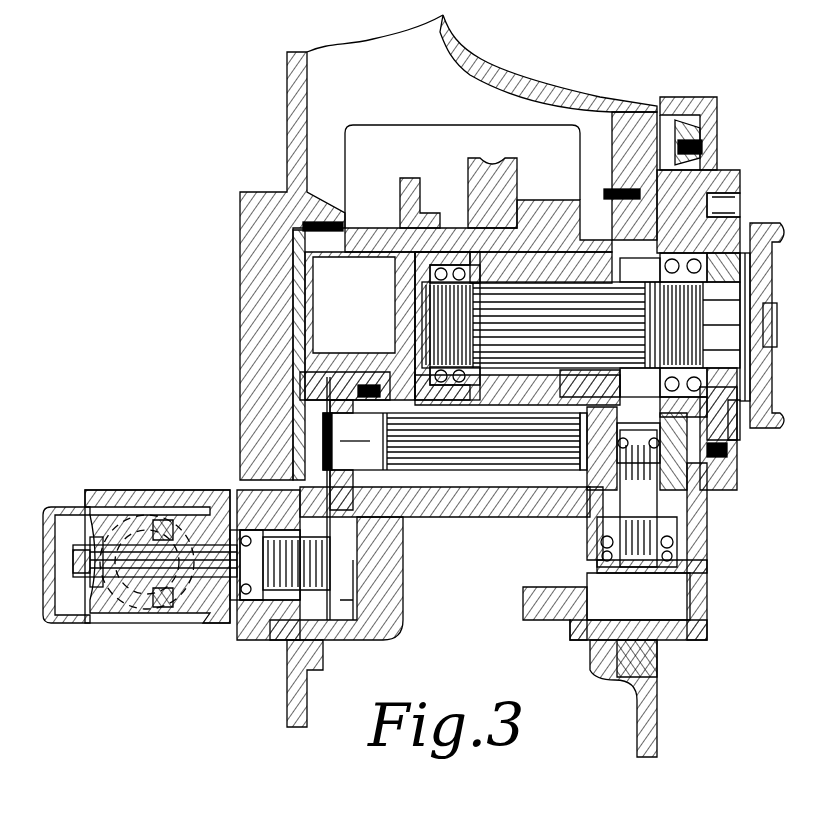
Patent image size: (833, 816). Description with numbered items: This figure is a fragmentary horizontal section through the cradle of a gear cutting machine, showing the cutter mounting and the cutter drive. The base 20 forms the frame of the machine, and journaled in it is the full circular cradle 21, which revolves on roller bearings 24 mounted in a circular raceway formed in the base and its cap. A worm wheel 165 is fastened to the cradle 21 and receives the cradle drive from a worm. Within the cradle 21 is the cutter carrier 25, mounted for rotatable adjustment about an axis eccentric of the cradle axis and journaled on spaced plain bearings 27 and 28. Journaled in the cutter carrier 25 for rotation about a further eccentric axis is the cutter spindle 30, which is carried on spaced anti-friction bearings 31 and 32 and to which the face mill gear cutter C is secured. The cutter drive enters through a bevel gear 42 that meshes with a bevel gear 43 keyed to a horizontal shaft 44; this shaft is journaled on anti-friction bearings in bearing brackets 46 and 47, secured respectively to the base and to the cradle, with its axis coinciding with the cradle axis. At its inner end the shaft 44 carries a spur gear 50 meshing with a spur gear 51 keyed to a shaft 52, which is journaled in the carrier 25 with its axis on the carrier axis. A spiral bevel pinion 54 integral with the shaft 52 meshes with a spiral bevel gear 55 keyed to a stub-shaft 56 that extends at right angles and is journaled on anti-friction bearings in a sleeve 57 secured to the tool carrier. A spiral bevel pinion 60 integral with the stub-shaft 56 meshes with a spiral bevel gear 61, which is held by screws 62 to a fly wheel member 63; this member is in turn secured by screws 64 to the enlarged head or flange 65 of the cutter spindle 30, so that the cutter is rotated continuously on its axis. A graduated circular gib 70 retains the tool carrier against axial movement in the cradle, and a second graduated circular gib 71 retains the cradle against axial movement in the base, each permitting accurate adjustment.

The base 20 is at (560, 94).
The cradle 21 is at (366, 228).
The roller bearings 24 is at (318, 222).
The cutter carrier 25 is at (486, 505).
The plain bearing 27 is at (580, 218).
The plain bearing 28 is at (399, 522).
The cutter spindle 30 is at (530, 300).
The anti-friction bearing 31 is at (668, 258).
The anti-friction bearing 32 is at (480, 268).
The bevel gear 42 is at (142, 600).
The bevel gear 43 is at (162, 520).
The horizontal shaft 44 is at (210, 580).
The bearing bracket 46 is at (160, 622).
The bearing bracket 47 is at (266, 615).
The spur gear 50 is at (372, 625).
The spur gear 51 is at (335, 400).
The shaft 52 is at (440, 470).
The spiral bevel pinion 54 is at (590, 485).
The spiral bevel gear 55 is at (670, 475).
The stub-shaft 56 is at (605, 530).
The sleeve 57 is at (605, 548).
The spiral bevel pinion 60 is at (600, 495).
The spiral bevel gear 61 is at (681, 128).
The screws 62 is at (712, 152).
The fly wheel member 63 is at (716, 482).
The screws 64 is at (728, 452).
The flange 65 is at (733, 428).
The circular gib 70 is at (657, 668).
The circular gib 71 is at (660, 187).
The worm wheel 165 is at (497, 168).
The face mill gear cutter C is at (776, 235).